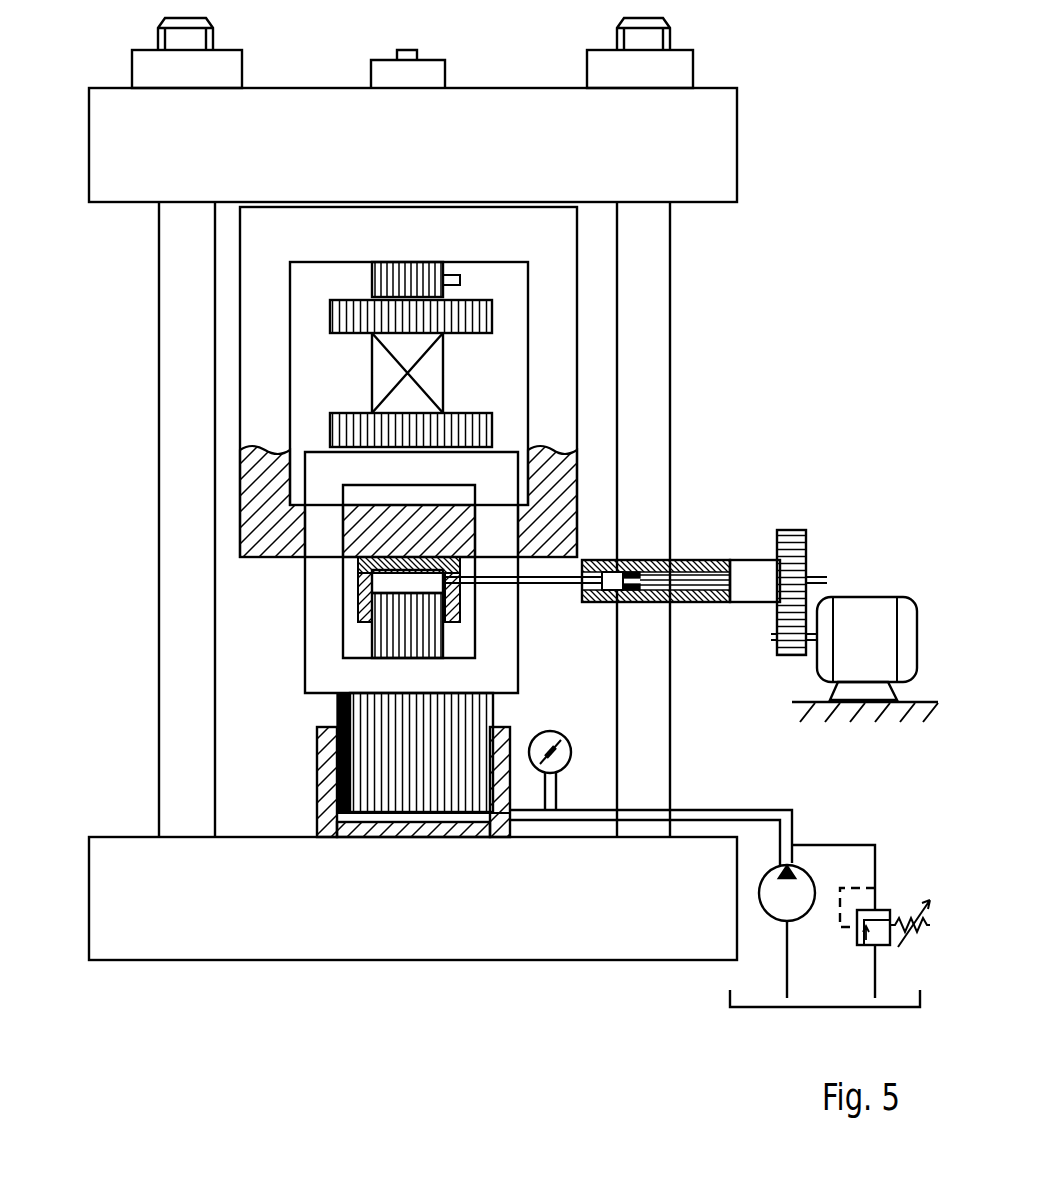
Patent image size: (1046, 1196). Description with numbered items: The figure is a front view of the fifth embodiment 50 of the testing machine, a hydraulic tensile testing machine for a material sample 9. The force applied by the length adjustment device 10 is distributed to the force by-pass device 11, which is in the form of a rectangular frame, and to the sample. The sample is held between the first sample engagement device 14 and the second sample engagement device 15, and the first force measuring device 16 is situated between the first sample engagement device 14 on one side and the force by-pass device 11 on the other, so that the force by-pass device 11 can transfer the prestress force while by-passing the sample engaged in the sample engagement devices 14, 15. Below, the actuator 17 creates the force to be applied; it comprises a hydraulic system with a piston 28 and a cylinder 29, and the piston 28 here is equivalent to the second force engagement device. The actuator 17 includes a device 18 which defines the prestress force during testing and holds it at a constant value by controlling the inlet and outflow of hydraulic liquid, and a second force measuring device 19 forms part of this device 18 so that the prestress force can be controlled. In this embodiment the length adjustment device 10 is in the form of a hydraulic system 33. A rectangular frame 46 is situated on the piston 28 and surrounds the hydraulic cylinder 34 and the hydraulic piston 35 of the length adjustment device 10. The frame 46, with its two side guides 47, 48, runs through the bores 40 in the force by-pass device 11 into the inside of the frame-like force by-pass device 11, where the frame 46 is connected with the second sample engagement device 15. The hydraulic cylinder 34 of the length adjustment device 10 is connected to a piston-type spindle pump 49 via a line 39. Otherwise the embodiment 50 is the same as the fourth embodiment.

The material sample 9 is at (383, 365).
The length adjustment device 10 is at (467, 600).
The force by-pass device 11 is at (560, 239).
The first sample engagement device 14 is at (477, 313).
The second sample engagement device 15 is at (477, 428).
The first force measuring device 16 is at (372, 276).
The actuator 17 is at (310, 770).
The prestress force defining device 18 is at (880, 912).
The second force measuring device 19 is at (572, 752).
The piston 28 is at (407, 795).
The cylinder 29 is at (325, 827).
The hydraulic system 33 is at (468, 623).
The hydraulic cylinder 34 is at (360, 618).
The hydraulic piston 35 is at (383, 632).
The line 39 is at (547, 587).
The bores 40 is at (300, 530).
The rectangular frame 46 is at (317, 620).
The side guide 47 is at (305, 580).
The side guide 48 is at (518, 572).
The piston-type spindle pump 49 is at (878, 607).
The embodiment 50 is at (705, 368).